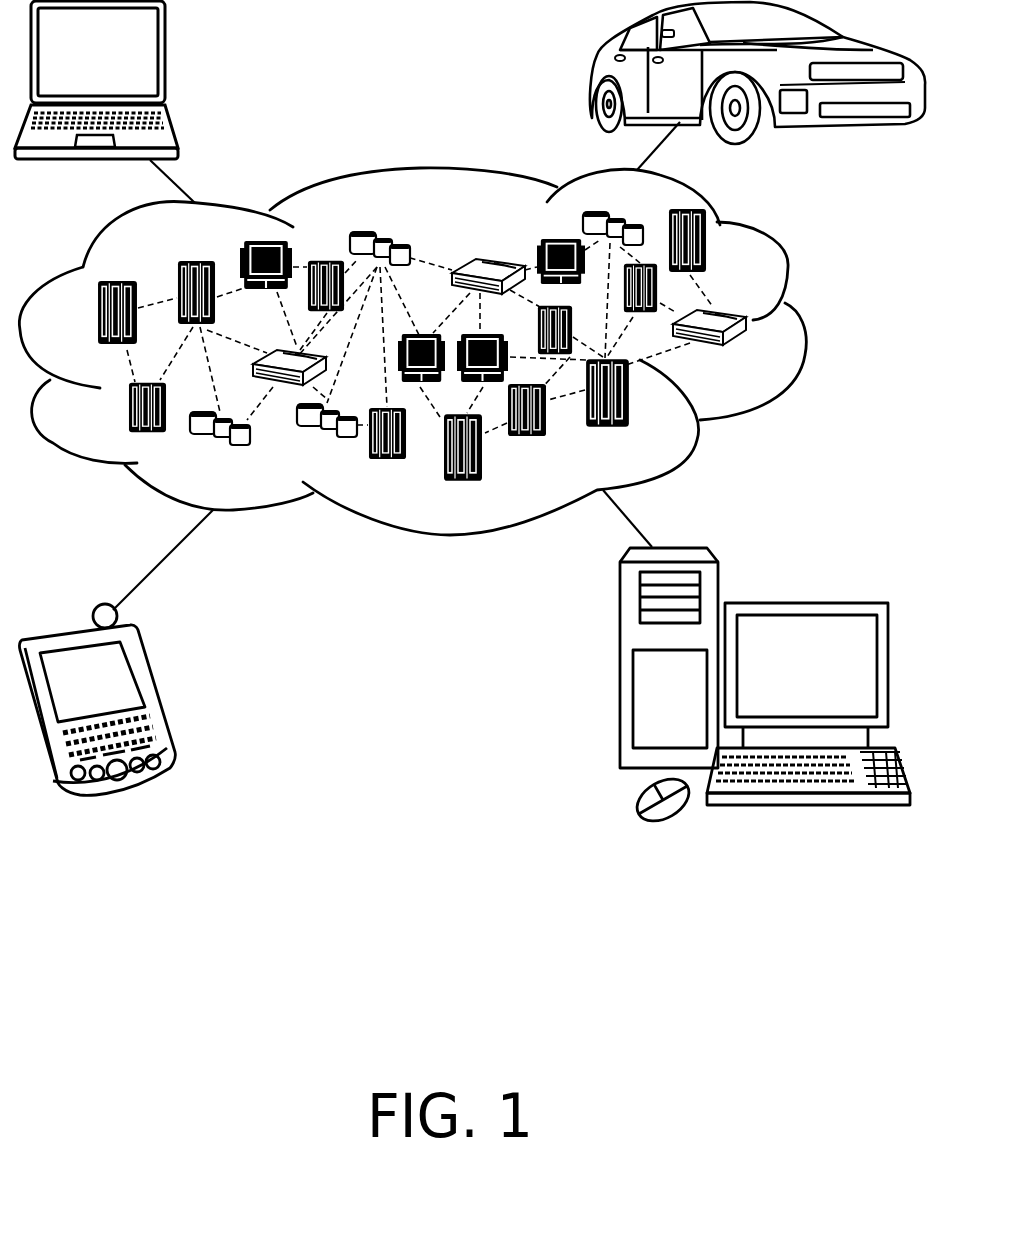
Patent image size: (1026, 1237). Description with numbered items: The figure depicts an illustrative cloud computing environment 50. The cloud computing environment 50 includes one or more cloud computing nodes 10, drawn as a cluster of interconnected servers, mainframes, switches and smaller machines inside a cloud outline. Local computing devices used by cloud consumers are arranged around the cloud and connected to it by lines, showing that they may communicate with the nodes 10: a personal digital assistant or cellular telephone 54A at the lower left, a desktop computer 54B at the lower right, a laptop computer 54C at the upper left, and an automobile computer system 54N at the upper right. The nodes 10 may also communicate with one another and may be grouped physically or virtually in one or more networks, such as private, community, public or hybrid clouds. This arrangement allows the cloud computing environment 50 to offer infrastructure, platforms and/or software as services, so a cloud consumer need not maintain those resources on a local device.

The cloud computing node 10 is at (748, 353).
The cloud computing environment 50 is at (802, 323).
The personal digital assistant or cellular telephone 54A is at (153, 695).
The desktop computer 54B is at (803, 603).
The laptop computer 54C is at (163, 60).
The automobile computer system 54N is at (590, 72).